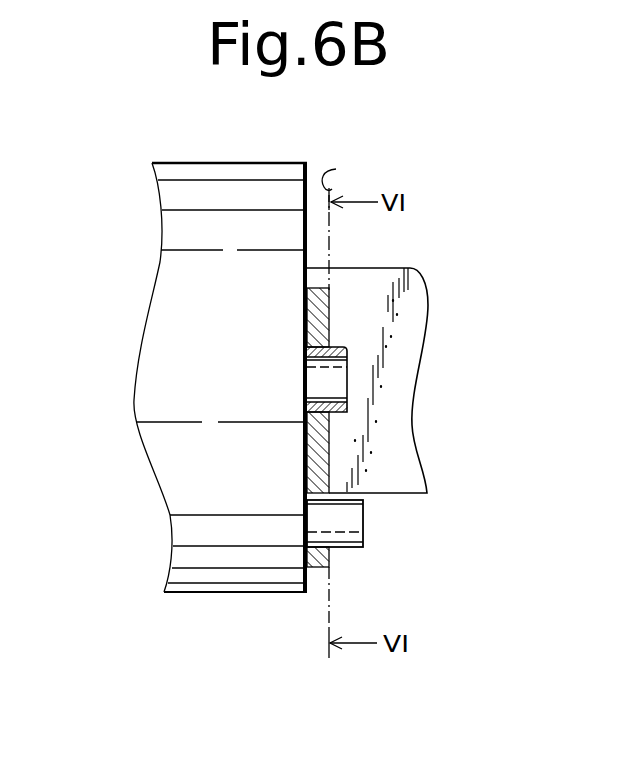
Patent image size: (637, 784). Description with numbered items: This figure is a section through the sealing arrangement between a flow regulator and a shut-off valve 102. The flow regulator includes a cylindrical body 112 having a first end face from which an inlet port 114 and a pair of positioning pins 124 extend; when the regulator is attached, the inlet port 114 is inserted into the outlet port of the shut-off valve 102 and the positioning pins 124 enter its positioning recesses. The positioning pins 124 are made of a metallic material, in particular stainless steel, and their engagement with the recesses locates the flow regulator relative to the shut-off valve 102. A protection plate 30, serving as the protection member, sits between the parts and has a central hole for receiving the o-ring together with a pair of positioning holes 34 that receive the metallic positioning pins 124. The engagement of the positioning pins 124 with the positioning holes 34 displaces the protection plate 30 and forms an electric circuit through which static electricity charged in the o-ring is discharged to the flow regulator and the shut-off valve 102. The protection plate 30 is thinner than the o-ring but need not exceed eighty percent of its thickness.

The cylindrical body 112 is at (178, 207).
The shut-off valve 102 is at (337, 169).
The protection plate 30 is at (330, 293).
The inlet port 114 is at (345, 345).
The positioning holes 34 is at (306, 497).
The positioning pins 124 is at (355, 514).